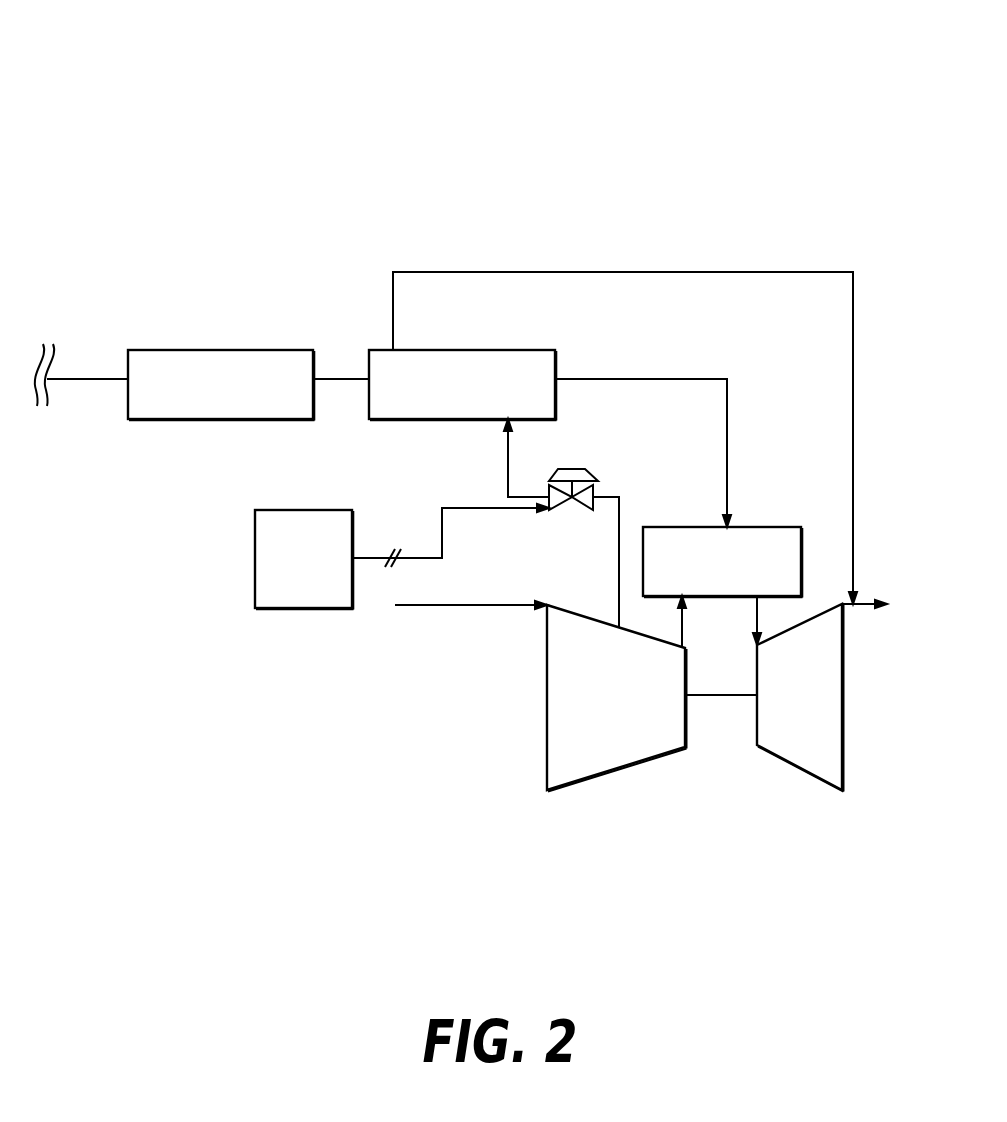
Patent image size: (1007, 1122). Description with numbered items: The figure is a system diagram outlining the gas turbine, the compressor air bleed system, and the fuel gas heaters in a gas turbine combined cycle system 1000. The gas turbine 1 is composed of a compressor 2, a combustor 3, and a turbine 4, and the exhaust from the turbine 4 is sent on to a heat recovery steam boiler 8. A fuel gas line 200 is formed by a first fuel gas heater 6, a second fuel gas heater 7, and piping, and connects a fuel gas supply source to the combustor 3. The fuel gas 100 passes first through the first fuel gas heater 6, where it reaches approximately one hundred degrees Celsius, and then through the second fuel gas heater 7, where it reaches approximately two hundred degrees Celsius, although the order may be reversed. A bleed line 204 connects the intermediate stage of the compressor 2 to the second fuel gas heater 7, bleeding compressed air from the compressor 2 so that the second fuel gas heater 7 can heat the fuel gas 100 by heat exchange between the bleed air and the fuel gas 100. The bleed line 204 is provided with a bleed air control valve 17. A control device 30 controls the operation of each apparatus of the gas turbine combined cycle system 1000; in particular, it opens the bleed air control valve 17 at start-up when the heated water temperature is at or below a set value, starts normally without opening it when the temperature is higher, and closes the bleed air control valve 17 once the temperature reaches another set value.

The gas turbine combined cycle system 1000 is at (238, 160).
The fuel gas 100 is at (63, 339).
The first fuel gas heater 6 is at (201, 350).
The second fuel gas heater 7 is at (373, 350).
The fuel gas line 200 is at (642, 379).
The bleed air control valve 17 is at (587, 469).
The bleed line 204 is at (507, 463).
The control device 30 is at (255, 556).
The compressor 2 is at (546, 696).
The combustor 3 is at (782, 527).
The turbine 4 is at (818, 778).
The gas turbine 1 is at (726, 760).
The heat recovery steam boiler 8 is at (894, 660).